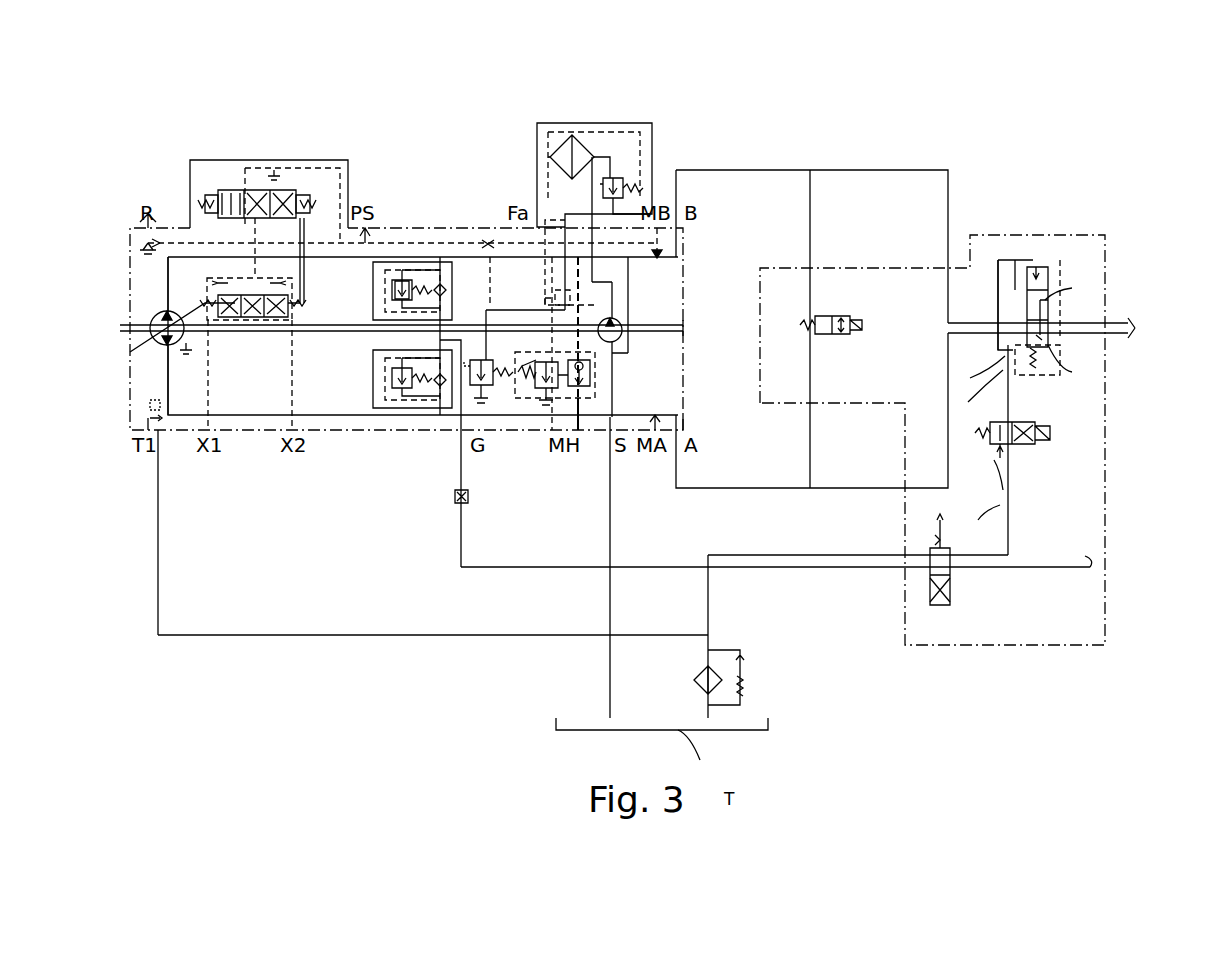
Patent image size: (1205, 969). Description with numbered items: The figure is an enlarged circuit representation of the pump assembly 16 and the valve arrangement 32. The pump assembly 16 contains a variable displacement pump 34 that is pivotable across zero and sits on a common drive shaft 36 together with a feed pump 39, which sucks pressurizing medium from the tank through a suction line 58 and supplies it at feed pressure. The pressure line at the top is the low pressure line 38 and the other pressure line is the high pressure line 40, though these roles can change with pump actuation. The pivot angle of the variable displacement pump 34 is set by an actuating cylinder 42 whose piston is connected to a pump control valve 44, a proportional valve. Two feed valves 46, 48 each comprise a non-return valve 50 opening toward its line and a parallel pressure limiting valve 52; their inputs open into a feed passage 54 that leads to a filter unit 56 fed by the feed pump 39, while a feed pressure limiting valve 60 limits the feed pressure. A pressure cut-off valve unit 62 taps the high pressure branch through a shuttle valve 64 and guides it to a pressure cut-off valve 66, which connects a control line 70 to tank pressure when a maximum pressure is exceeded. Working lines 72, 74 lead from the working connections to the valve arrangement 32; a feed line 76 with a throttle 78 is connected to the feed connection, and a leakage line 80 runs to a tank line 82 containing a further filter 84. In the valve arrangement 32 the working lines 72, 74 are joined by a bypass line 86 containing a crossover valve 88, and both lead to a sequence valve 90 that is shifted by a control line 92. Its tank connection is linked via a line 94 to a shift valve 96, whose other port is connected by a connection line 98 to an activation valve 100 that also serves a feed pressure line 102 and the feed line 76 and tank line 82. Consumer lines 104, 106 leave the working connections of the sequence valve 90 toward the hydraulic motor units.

The pump assembly 16 is at (427, 255).
The valve arrangement 32 is at (1062, 235).
The variable displacement pump 34 is at (145, 318).
The drive shaft 36 is at (140, 340).
The low pressure line 38 is at (513, 253).
The feed pump 39 is at (660, 380).
The high pressure line 40 is at (340, 430).
The actuating cylinder 42 is at (230, 318).
The pump control valve 44 is at (228, 185).
The feed valve 46 is at (400, 430).
The feed valve 48 is at (418, 228).
The non-return valve 50 is at (460, 258).
The pressure limiting valve 52 is at (382, 300).
The feed passage 54 is at (540, 300).
The filter unit 56 is at (592, 160).
The suction line 58 is at (610, 577).
The feed pressure limiting valve 60 is at (492, 455).
The pressure cut-off valve unit 62 is at (592, 400).
The shuttle valve 64 is at (612, 452).
The pressure cut-off valve 66 is at (555, 410).
The control line 70 is at (553, 297).
The working line 72 is at (757, 170).
The working line 74 is at (715, 487).
The feed line 76 is at (515, 636).
The throttle 78 is at (455, 500).
The leakage line 80 is at (158, 535).
The tank line 82 is at (712, 577).
The filter 84 is at (740, 676).
The bypass line 86 is at (812, 207).
The crossover valve 88 is at (832, 315).
The sequence valve 90 is at (1050, 290).
The control line 92 is at (1005, 262).
The line 94 is at (1013, 380).
The shift valve 96 is at (1033, 452).
The connection line 98 is at (1013, 490).
The activation valve 100 is at (955, 600).
The feed pressure line 102 is at (1092, 568).
The consumer line 104 is at (1125, 320).
The consumer line 106 is at (1125, 336).